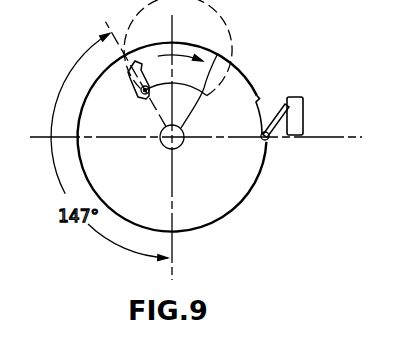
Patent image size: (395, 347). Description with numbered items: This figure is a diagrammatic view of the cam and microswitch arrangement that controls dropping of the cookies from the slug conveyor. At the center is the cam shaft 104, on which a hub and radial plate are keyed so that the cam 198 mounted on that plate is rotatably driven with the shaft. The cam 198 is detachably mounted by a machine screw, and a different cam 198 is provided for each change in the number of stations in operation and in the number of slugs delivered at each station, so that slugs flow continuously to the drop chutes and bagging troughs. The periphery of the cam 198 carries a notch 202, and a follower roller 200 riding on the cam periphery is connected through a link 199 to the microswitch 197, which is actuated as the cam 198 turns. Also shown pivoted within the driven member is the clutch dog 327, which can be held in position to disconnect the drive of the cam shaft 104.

The cam shaft 104 is at (218, 53).
The stop block 197 is at (304, 118).
The cam 198 is at (246, 203).
The link 199 is at (286, 98).
The pin roller 200 is at (268, 139).
The notch 202 is at (259, 99).
The clutch dog 327 is at (133, 88).